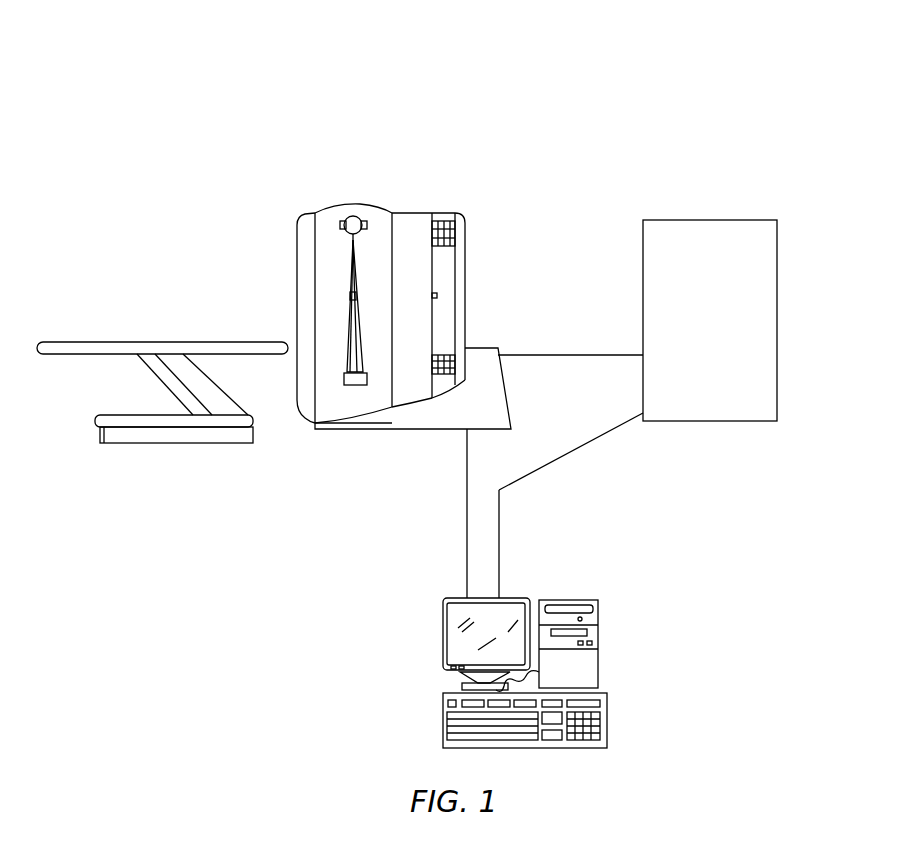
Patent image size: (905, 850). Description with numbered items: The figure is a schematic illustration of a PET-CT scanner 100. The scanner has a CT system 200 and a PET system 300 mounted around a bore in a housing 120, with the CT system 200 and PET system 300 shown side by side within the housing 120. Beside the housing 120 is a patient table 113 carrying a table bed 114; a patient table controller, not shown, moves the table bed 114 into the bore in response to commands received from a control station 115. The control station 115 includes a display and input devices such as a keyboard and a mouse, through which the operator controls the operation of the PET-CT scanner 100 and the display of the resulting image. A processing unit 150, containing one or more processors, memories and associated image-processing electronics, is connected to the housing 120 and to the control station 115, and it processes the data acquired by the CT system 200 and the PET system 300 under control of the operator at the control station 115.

The PET-CT scanner 100 is at (714, 49).
The patient table 113 is at (162, 366).
The table bed 114 is at (78, 340).
The control station 115 is at (648, 593).
The housing 120 is at (326, 211).
The processing unit 150 is at (711, 219).
The CT system 200 is at (368, 241).
The PET system 300 is at (424, 238).